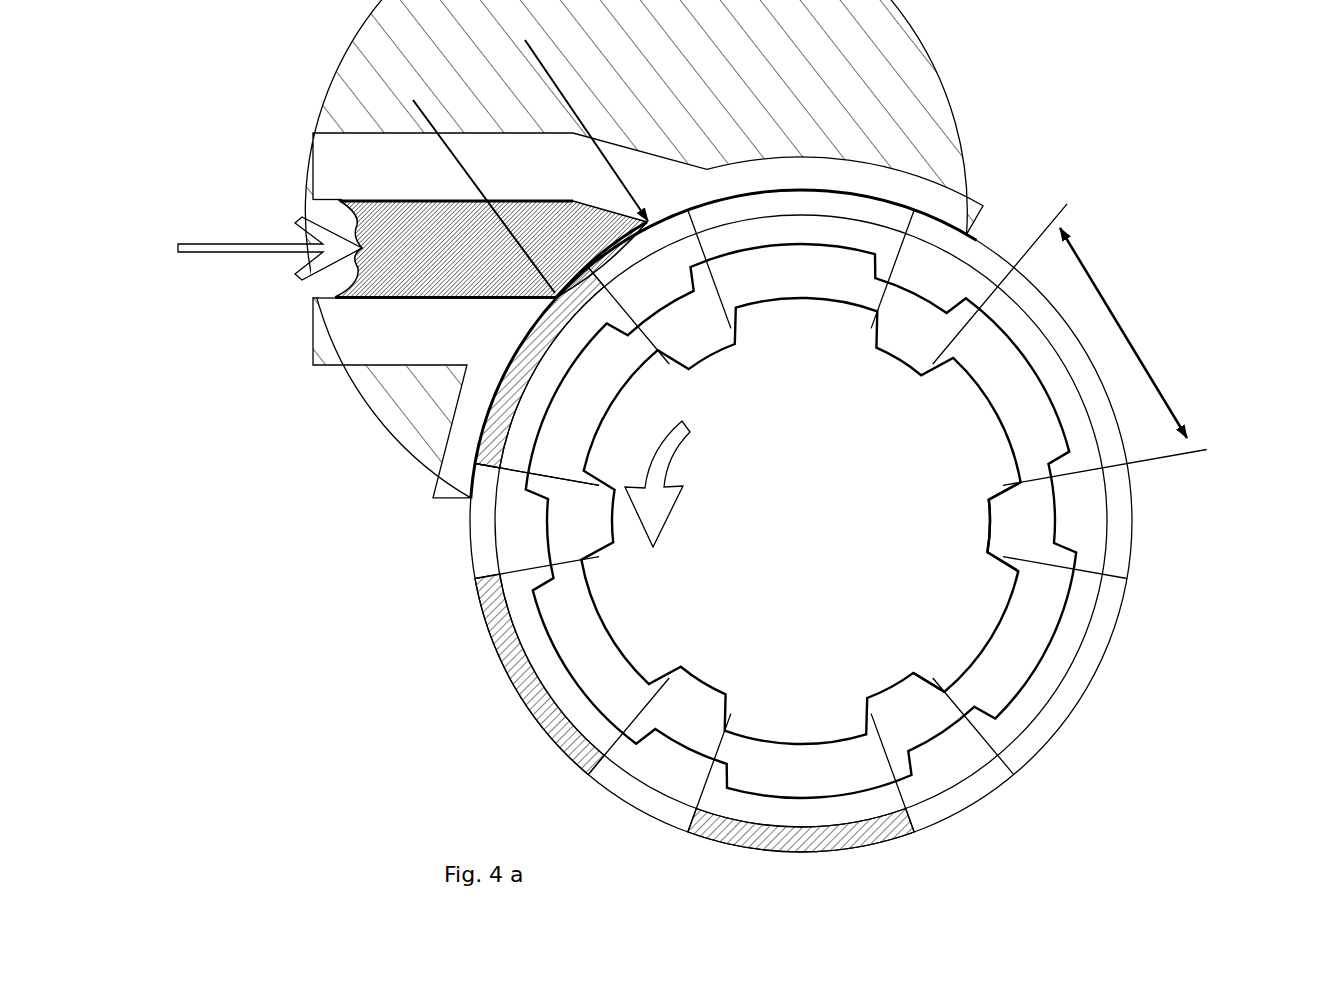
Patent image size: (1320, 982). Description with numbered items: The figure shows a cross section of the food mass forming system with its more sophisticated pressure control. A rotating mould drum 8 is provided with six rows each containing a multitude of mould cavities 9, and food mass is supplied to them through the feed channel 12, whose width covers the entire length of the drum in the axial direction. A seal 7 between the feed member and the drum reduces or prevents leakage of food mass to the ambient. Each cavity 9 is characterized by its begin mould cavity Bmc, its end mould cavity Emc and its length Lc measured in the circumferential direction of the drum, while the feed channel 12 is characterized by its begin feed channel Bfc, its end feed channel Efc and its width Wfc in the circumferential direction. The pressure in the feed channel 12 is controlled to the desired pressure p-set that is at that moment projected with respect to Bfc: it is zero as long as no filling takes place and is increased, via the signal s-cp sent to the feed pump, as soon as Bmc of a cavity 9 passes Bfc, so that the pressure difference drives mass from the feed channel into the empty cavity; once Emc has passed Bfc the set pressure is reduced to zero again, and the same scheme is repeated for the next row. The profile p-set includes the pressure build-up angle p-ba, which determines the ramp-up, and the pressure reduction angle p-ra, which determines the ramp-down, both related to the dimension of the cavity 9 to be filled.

The seal 7 is at (455, 440).
The mould drum 8 is at (492, 540).
The mould cavities 9 is at (813, 198).
The feed channel 12 is at (472, 275).
The end feed channel Efc is at (555, 293).
The width of the feed channel Wfc is at (523, 42).
The begin feed channel Bfc is at (650, 220).
The begin mould cavity Bmc is at (692, 203).
The end mould cavity Emc is at (913, 203).
The length of a mould cavity Lc is at (1130, 330).
The signal to the feed pump s-cp is at (525, 620).
The desired pressure p-set is at (612, 644).
The pressure build-up angle p-ba is at (1000, 553).
The pressure reduction angle p-ra is at (930, 680).